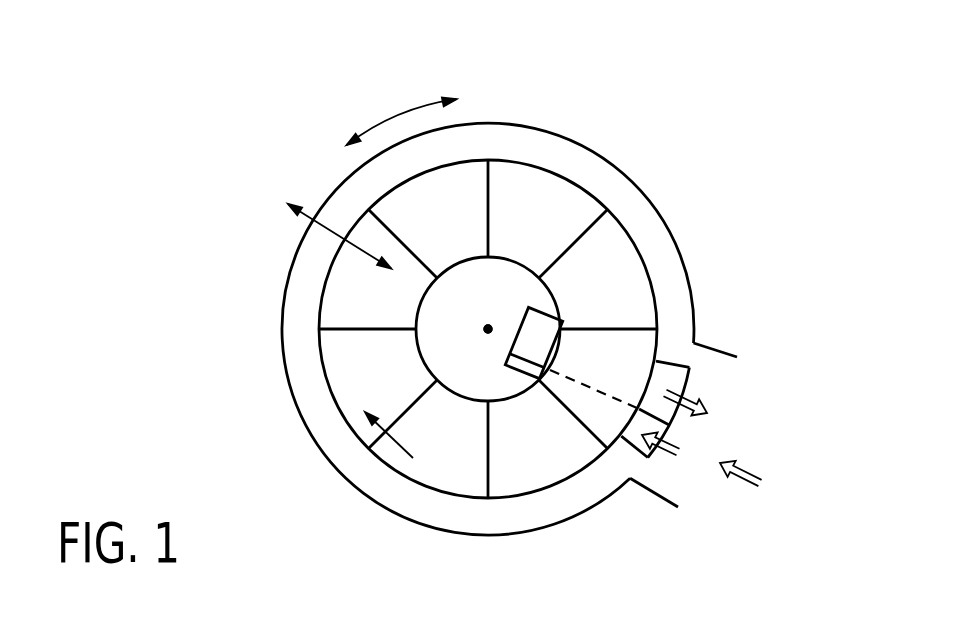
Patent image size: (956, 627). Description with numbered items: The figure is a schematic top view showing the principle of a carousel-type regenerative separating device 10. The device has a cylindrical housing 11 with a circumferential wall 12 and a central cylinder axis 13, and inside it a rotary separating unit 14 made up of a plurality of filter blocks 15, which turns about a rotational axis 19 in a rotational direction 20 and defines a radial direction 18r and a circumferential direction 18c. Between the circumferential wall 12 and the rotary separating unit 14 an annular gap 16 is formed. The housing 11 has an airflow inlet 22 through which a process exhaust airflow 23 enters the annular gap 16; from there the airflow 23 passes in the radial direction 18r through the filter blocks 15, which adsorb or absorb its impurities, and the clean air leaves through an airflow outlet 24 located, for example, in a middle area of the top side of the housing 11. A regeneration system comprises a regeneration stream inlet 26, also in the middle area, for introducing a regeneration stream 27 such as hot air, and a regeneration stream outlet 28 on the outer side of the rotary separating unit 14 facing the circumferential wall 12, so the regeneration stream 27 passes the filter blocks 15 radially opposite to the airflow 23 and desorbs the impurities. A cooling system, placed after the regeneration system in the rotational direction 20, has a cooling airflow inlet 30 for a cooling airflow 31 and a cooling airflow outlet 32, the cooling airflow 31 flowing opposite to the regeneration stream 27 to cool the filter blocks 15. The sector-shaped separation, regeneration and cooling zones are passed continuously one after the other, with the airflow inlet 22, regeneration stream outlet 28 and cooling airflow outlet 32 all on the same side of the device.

The separating device 10 is at (163, 192).
The cylindrical housing 11 is at (553, 128).
The circumferential wall 12 is at (598, 152).
The central cylinder axis 13 is at (488, 335).
The rotary separating unit 14 is at (640, 247).
The filter blocks 15 is at (337, 289).
The annular gap 16 is at (628, 195).
The circumferential direction 18c is at (412, 110).
The radial direction 18r is at (328, 226).
The rotational axis 19 is at (488, 329).
The rotational direction 20 is at (400, 452).
The airflow inlet 22 is at (668, 493).
The process exhaust airflow 23 is at (745, 484).
The airflow outlet 24 is at (412, 340).
The regeneration stream inlet 26 is at (562, 325).
The regeneration stream 27 is at (707, 408).
The regeneration stream outlet 28 is at (668, 380).
The cooling airflow inlet 30 is at (623, 438).
The cooling airflow 31 is at (678, 452).
The cooling airflow outlet 32 is at (522, 372).